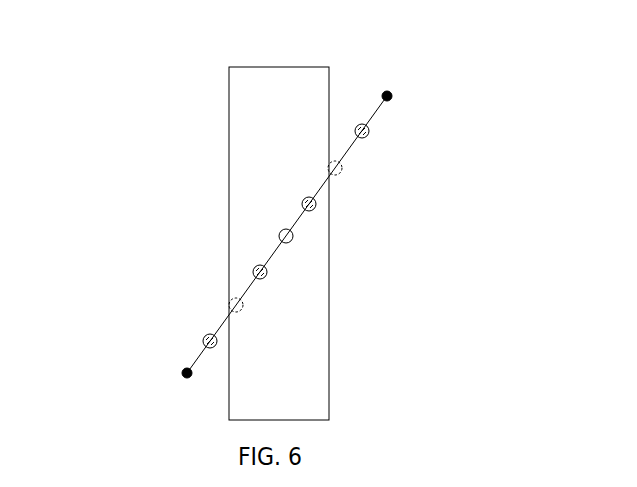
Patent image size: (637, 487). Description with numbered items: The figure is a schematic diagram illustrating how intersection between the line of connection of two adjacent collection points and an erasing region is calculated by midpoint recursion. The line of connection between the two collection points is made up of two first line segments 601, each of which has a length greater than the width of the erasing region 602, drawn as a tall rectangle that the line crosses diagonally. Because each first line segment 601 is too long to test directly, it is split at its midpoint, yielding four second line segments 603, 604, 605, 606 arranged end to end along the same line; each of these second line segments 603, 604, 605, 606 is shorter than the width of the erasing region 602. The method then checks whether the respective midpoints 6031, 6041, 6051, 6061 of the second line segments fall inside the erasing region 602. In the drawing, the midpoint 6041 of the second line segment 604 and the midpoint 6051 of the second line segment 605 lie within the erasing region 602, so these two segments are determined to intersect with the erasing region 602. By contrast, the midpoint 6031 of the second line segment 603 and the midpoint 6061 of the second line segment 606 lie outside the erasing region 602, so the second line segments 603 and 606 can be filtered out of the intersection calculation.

The first line segment 601 is at (383, 101).
The erasing region 602 is at (329, 413).
The second line segment 603 is at (188, 372).
The midpoint 6031 is at (203, 343).
The second line segment 604 is at (243, 300).
The midpoint 6041 is at (254, 268).
The second line segment 605 is at (293, 233).
The midpoint 6051 is at (302, 201).
The second line segment 606 is at (341, 162).
The midpoint 6061 is at (361, 124).